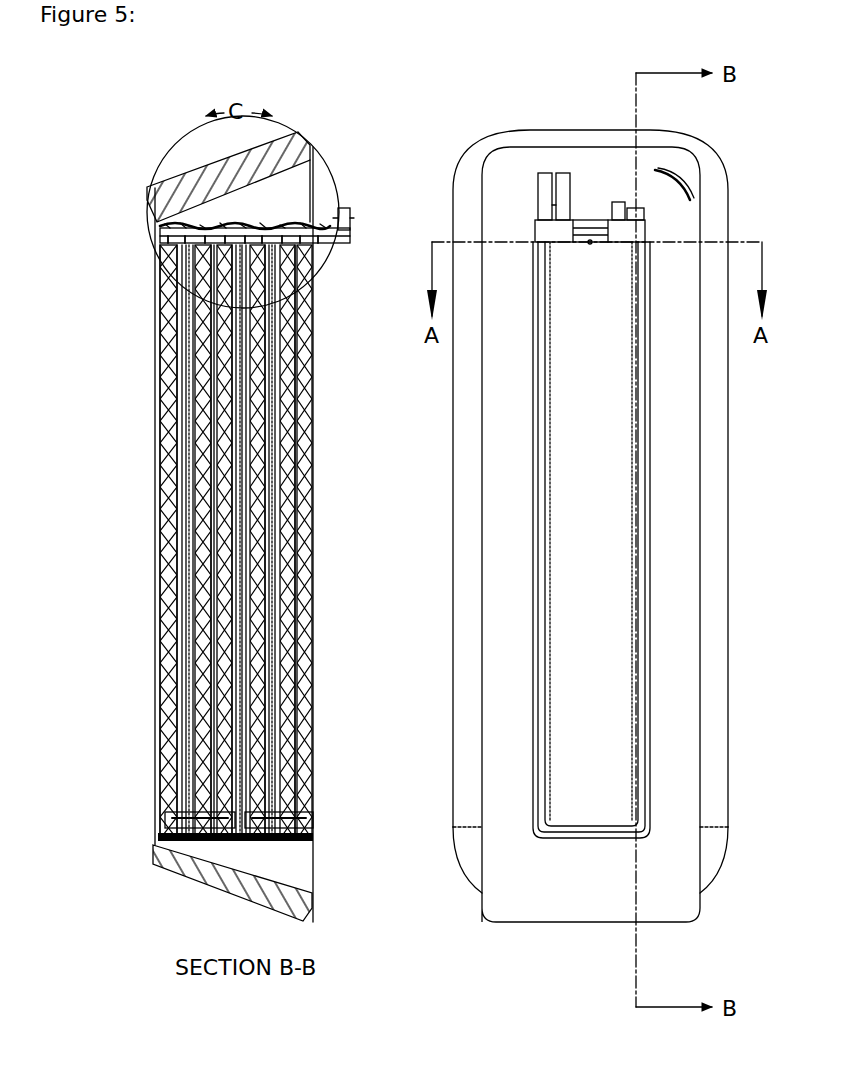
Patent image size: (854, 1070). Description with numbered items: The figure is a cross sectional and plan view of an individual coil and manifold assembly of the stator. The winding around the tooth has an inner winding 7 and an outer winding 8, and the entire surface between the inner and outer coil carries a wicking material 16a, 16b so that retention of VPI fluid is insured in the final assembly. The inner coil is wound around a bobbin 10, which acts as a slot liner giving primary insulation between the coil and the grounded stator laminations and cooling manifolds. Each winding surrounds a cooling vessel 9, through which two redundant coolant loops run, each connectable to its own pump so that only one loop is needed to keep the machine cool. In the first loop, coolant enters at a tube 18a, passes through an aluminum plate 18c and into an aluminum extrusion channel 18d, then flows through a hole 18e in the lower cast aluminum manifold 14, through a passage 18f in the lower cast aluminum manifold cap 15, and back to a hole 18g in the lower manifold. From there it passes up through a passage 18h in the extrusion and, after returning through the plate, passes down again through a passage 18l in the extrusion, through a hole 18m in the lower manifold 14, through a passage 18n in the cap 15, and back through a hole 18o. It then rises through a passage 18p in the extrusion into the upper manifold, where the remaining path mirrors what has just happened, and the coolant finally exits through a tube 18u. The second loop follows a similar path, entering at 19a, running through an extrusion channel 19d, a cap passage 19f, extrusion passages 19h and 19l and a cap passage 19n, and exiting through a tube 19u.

The inner winding 7 is at (218, 877).
The outer winding 8 is at (247, 887).
The cooling vessel 9 is at (302, 331).
The bobbin 10 is at (680, 162).
The lower cast aluminum manifold 14 is at (308, 817).
The lower cast aluminum manifold cap 15 is at (317, 824).
The wicking material 16a is at (228, 196).
The wicking material 16b is at (253, 878).
The tube 18a is at (352, 231).
The aluminum plate 18c is at (341, 245).
The aluminum extrusion channel 18d is at (288, 420).
The hole 18e is at (290, 815).
The passage 18f is at (313, 845).
The hole 18g is at (245, 815).
The passage 18h is at (245, 478).
The passage 18l is at (228, 475).
The hole 18m is at (208, 818).
The passage 18n is at (232, 850).
The hole 18o is at (167, 821).
The passage 18p is at (180, 423).
The tube 18u is at (545, 186).
The tube 19a is at (618, 208).
The aluminum extrusion channel 19d is at (273, 490).
The passage 19f is at (197, 492).
The passage 19h is at (260, 515).
The passage 19l is at (212, 515).
The passage 19n is at (200, 812).
The tube 19u is at (563, 186).